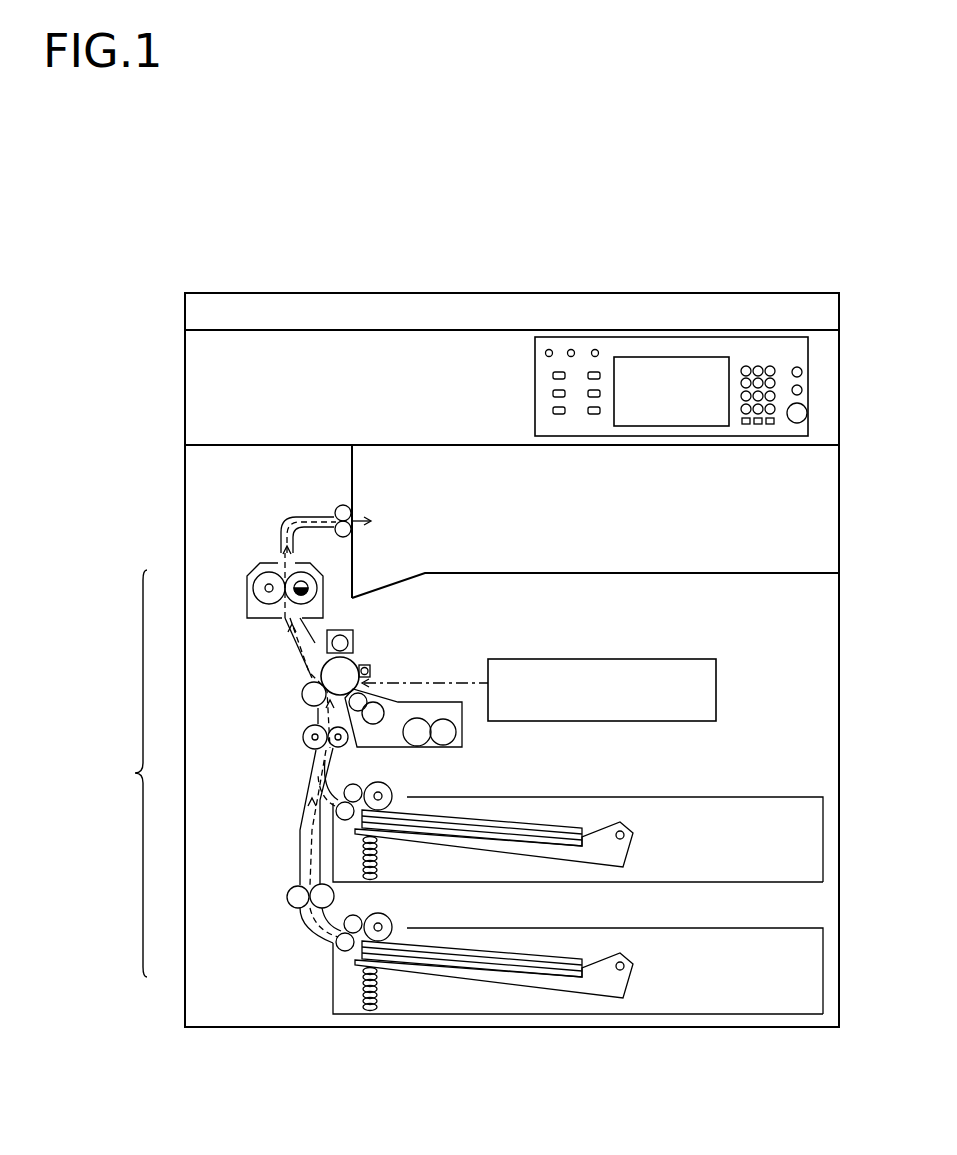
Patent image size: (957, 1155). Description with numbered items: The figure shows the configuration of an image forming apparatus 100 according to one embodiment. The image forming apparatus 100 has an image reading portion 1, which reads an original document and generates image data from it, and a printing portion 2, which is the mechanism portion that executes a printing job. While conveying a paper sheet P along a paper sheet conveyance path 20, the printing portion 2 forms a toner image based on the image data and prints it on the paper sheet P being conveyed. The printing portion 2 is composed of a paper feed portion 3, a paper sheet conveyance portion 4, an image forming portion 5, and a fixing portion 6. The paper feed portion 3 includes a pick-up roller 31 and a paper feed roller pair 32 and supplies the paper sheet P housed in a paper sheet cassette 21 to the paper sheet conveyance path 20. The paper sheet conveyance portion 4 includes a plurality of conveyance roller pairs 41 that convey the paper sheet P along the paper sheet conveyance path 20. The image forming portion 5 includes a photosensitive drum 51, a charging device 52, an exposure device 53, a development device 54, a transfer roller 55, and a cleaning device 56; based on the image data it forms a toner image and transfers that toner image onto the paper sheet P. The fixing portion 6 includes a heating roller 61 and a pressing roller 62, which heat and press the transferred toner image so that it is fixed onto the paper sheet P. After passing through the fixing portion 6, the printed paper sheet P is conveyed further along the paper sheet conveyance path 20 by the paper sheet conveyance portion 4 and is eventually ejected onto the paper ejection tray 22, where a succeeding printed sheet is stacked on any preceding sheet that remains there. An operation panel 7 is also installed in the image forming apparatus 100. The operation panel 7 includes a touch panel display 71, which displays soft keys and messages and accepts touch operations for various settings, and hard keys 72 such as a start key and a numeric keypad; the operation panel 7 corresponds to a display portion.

The image forming apparatus 100 is at (203, 266).
The image reading portion 1 is at (176, 364).
The printing portion 2 is at (132, 773).
The paper feed portion 3 is at (325, 973).
The paper sheet conveyance portion 4 is at (284, 885).
The image forming portion 5 is at (432, 698).
The fixing portion 6 is at (251, 581).
The operation panel 7 is at (649, 416).
The paper sheet conveyance path 20 is at (300, 812).
The paper sheet cassette 21 is at (752, 797).
The paper ejection tray 22 is at (665, 572).
The pick-up roller 31 is at (388, 789).
The paper feed roller pair 32 is at (350, 790).
The conveyance roller pair 41 is at (338, 508).
The photosensitive drum 51 is at (320, 672).
The charging device 52 is at (372, 670).
The exposure device 53 is at (588, 659).
The development device 54 is at (463, 745).
The transfer roller 55 is at (304, 694).
The cleaning device 56 is at (353, 637).
The heating roller 61 is at (321, 590).
The pressing roller 62 is at (250, 587).
The touch panel display 71 is at (633, 415).
The hard keys 72 is at (794, 418).
The paper sheet P is at (530, 822).